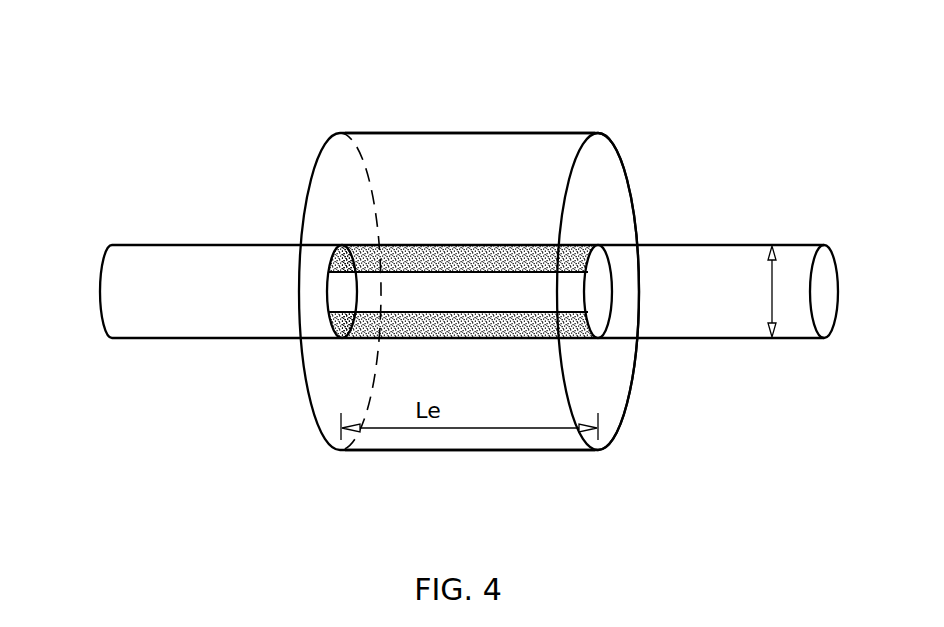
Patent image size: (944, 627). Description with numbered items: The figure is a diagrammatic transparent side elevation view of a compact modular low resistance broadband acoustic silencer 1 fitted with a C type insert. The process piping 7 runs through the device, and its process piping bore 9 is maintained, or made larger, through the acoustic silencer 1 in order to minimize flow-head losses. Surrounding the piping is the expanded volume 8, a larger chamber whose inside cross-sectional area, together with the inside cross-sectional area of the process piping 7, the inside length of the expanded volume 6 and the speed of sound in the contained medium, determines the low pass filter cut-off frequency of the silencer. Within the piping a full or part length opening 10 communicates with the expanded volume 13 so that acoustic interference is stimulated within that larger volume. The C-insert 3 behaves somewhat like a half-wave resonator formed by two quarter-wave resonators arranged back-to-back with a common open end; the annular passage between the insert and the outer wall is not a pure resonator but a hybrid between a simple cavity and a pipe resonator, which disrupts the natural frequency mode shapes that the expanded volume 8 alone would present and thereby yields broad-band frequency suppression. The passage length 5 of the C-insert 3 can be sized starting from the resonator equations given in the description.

The acoustic silencer 1 is at (614, 103).
The C-insert 3 is at (595, 245).
The passage length 5 is at (460, 112).
The expanded volume inside length 6 is at (419, 430).
The process piping 7 is at (208, 244).
The expanded volume 8 is at (318, 163).
The process piping bore 9 is at (784, 291).
The opening 10 is at (572, 293).
The expanded volume 13 is at (500, 148).